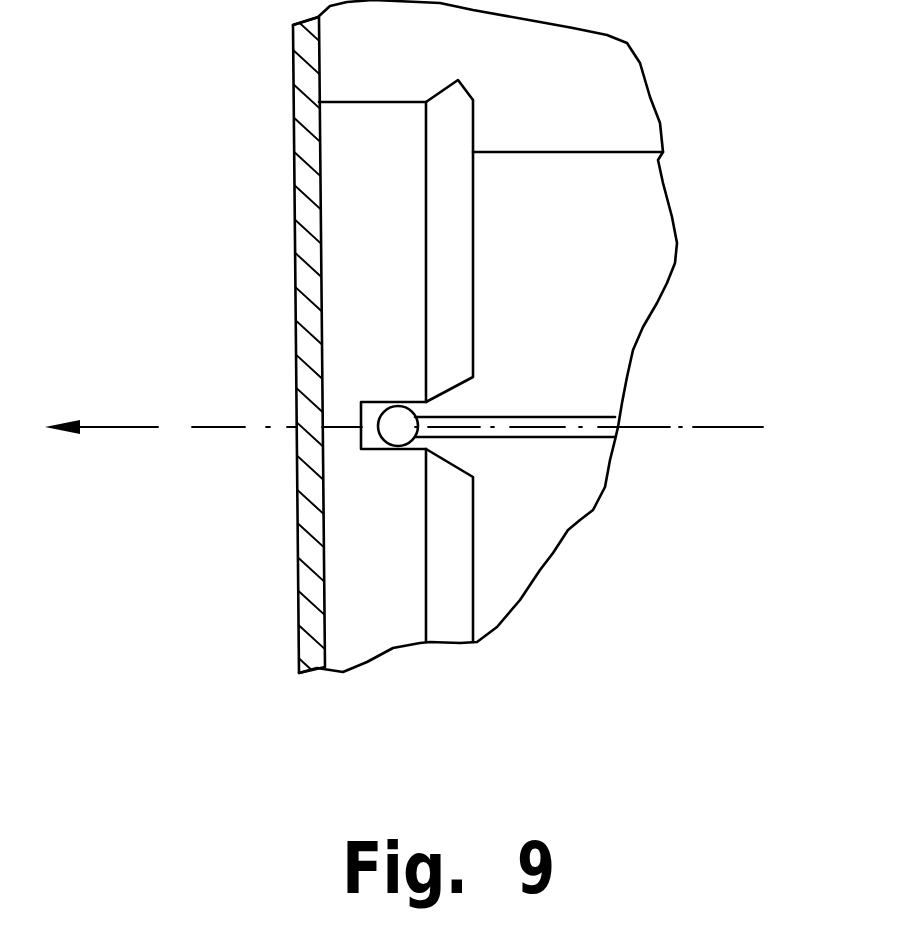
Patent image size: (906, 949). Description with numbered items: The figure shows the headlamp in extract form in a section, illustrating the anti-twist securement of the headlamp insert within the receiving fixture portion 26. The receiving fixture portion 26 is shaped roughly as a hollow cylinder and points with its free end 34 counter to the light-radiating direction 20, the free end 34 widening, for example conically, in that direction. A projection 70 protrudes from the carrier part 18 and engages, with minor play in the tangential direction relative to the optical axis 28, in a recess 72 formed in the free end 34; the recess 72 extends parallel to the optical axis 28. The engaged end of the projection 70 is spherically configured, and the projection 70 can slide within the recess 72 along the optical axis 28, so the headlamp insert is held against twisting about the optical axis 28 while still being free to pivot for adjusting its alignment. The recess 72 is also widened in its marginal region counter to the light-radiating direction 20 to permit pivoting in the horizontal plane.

The carrier part 18 is at (562, 175).
The light-radiating direction 20 is at (132, 427).
The receiving fixture portion 26 is at (366, 133).
The optical axis 28 is at (715, 428).
The free end 34 is at (453, 622).
The projection 70 is at (408, 438).
The recess 72 is at (455, 387).